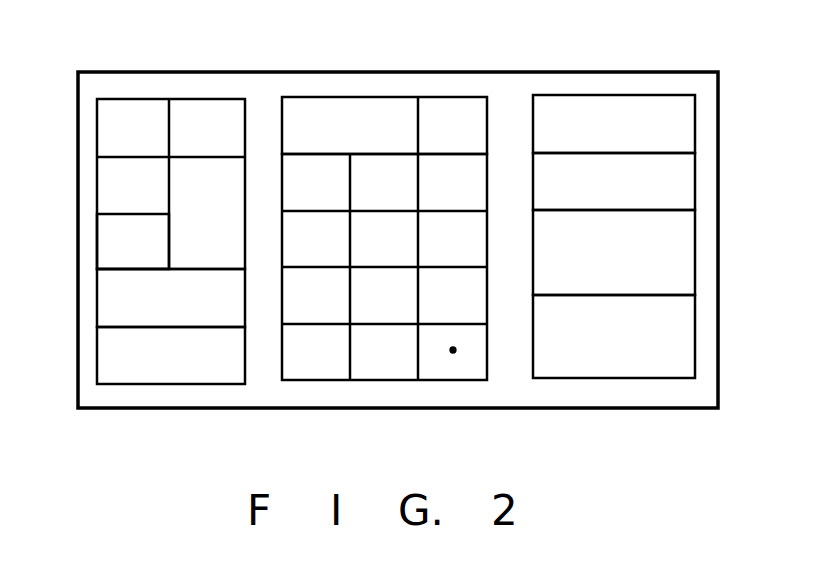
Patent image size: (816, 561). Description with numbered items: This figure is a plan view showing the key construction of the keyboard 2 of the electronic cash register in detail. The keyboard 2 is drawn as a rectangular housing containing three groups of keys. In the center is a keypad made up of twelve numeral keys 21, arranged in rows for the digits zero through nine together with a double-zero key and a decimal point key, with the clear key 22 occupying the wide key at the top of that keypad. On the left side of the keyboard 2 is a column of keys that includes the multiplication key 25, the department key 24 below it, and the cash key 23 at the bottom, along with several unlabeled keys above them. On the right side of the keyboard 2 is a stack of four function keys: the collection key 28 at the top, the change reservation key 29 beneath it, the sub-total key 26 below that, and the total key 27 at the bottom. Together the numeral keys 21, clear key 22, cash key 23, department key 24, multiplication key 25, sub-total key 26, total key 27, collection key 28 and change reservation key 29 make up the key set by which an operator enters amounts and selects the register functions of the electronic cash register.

The keyboard 2 is at (651, 72).
The numeral keys 21 is at (380, 380).
The clear key 22 is at (365, 97).
The cash key 23 is at (183, 384).
The department key 24 is at (97, 312).
The multiplication key 25 is at (97, 255).
The sub-total key 26 is at (695, 257).
The total key 27 is at (690, 338).
The collection key 28 is at (695, 130).
The change reservation key 29 is at (695, 185).